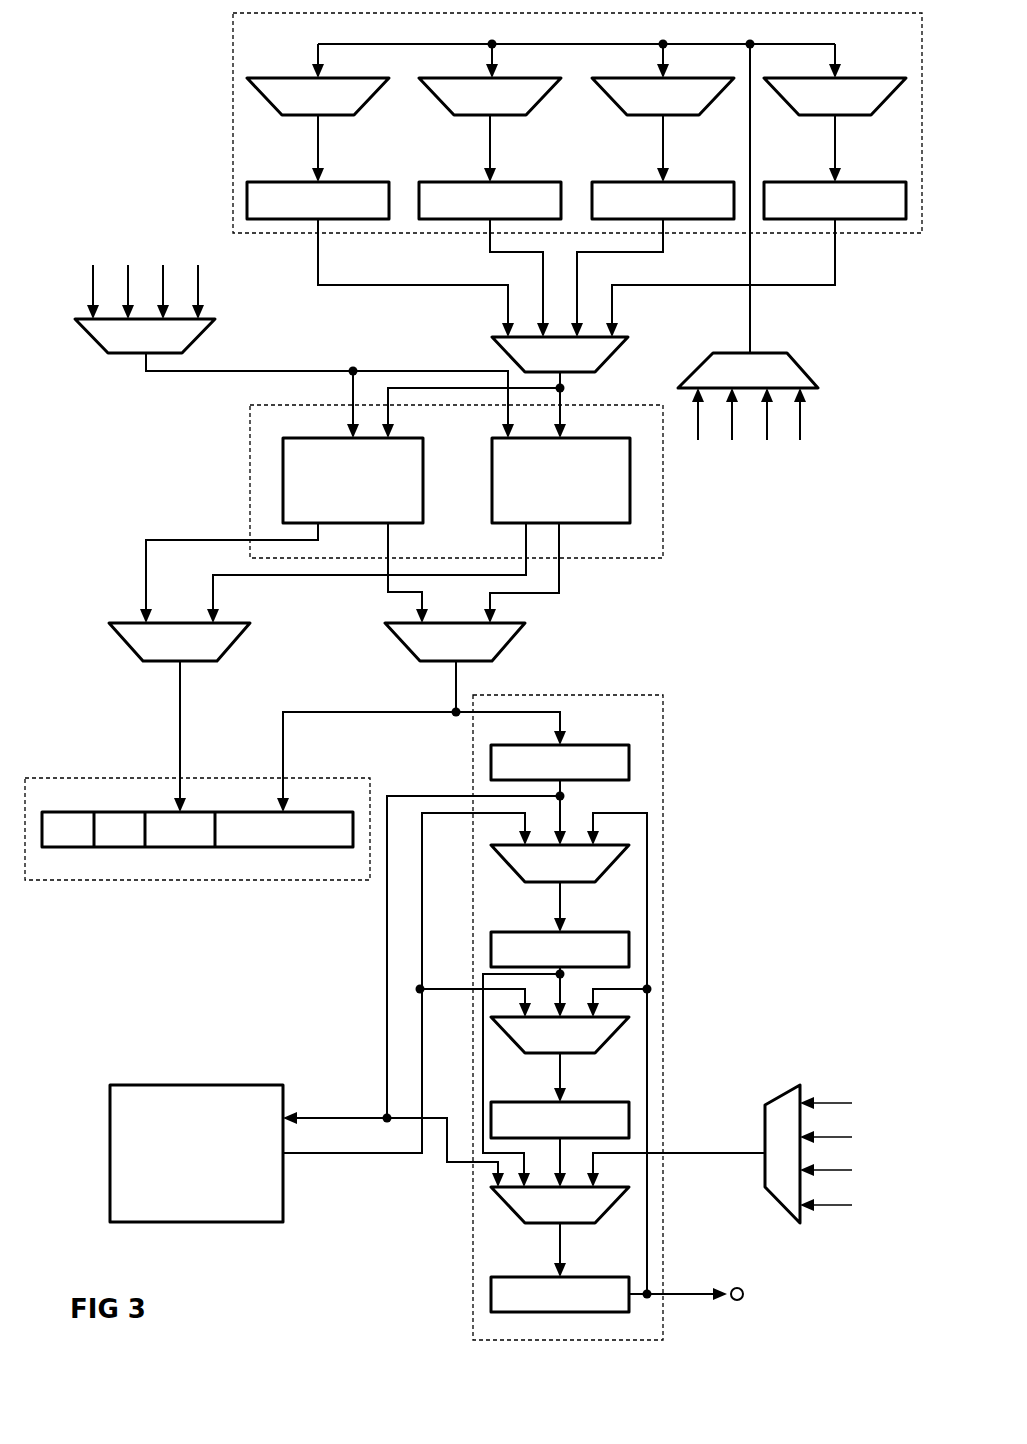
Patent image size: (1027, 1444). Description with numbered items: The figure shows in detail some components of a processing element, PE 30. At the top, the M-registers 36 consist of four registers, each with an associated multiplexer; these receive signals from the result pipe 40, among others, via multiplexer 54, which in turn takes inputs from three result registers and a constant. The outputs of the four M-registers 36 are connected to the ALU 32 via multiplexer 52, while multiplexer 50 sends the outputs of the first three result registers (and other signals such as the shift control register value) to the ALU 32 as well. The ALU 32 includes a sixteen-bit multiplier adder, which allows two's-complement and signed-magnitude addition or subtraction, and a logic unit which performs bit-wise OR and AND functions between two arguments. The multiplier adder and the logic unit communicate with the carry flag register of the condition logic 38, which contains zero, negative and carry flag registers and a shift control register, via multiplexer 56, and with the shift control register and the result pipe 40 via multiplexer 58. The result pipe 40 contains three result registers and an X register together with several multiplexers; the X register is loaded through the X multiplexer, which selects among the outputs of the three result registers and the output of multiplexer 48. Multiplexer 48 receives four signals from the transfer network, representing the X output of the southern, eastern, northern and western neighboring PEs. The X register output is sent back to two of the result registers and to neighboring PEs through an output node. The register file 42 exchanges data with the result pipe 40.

The processing element 30 is at (856, 637).
The M-registers 36 is at (233, 98).
The multiplexer 50 is at (208, 331).
The multiplexer 52 is at (625, 353).
The multiplexer 54 is at (798, 361).
The arithmetic logic unit 32 is at (247, 497).
The multiplexer 56 is at (243, 639).
The multiplexer 58 is at (517, 637).
The shift control and condition register 38 is at (83, 778).
The result register pipeline 40 is at (663, 880).
The register file 42 is at (236, 1215).
The multiplexer 48 is at (771, 1181).